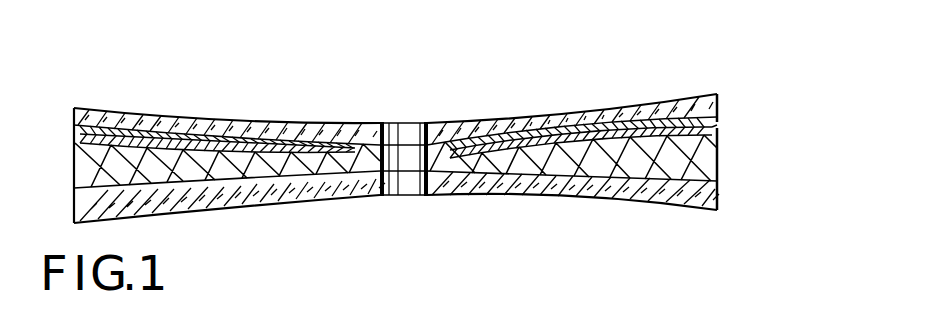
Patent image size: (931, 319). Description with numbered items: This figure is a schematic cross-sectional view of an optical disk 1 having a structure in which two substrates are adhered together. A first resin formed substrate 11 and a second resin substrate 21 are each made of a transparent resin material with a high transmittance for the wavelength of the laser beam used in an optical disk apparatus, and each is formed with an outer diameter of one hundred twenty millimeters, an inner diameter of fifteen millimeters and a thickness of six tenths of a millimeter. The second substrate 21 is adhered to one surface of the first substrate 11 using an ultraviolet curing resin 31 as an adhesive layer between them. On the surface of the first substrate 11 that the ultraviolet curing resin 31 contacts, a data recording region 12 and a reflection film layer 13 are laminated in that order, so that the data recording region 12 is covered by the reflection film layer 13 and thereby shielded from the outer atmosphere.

The optical disk 1 is at (758, 68).
The first resin formed substrate 11 is at (718, 105).
The data recording region 12 is at (540, 138).
The reflection film layer 13 is at (692, 137).
The second resin substrate 21 is at (710, 196).
The ultraviolet curing resin 31 is at (710, 164).